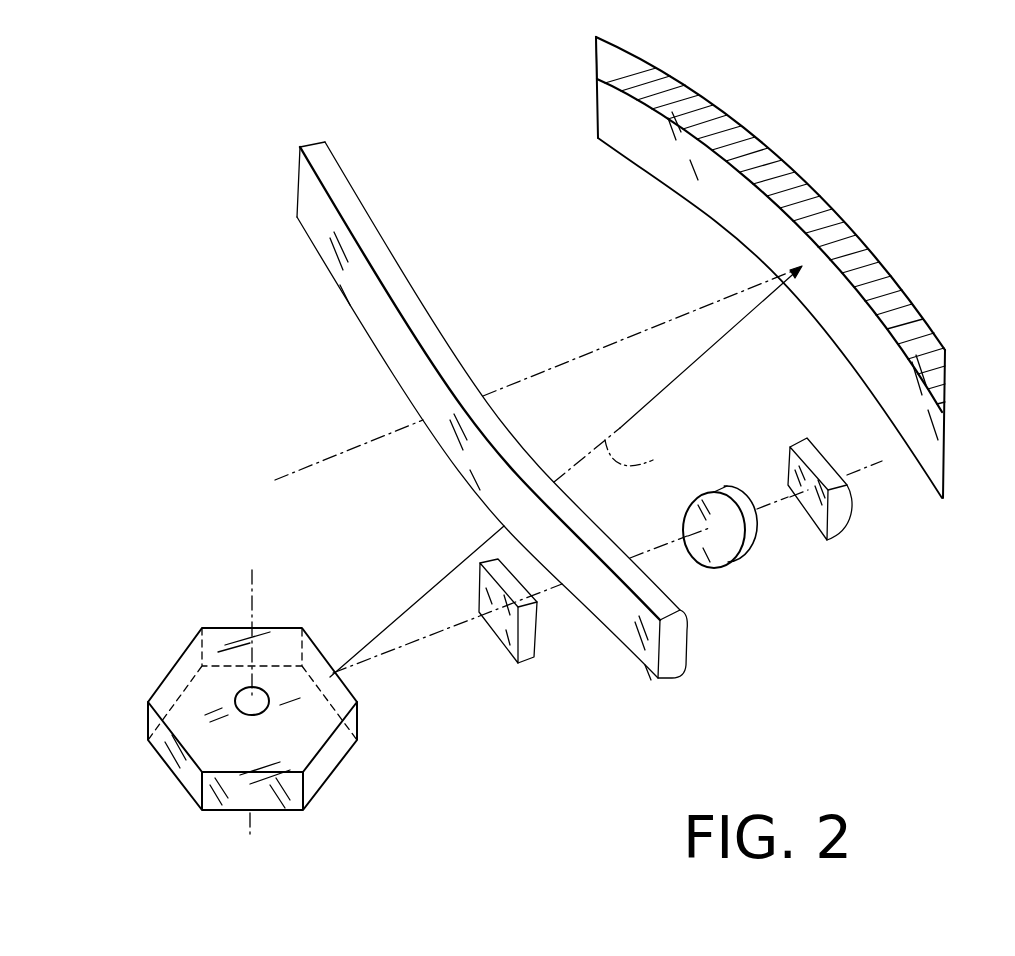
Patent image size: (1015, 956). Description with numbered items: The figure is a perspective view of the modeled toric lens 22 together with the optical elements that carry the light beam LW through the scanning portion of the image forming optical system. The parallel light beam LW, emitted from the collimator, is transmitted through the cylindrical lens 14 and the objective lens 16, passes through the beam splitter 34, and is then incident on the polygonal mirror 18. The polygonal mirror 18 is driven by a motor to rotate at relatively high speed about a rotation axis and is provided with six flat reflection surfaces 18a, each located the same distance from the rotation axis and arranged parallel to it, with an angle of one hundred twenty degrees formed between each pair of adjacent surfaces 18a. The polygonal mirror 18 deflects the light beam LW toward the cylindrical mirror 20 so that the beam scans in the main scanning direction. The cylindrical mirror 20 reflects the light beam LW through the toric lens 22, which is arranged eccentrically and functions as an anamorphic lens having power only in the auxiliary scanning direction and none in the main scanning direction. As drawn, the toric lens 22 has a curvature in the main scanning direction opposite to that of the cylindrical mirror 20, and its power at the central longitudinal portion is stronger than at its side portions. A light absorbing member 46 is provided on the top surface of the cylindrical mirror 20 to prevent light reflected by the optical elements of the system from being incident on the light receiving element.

The cylindrical lens 14 is at (851, 515).
The objective lens 16 is at (757, 542).
The polygonal mirror 18 is at (320, 730).
The flat reflection surfaces 18a is at (167, 760).
The cylindrical mirror 20 is at (937, 435).
The toric lens 22 is at (452, 357).
The beam splitter 34 is at (503, 647).
The light absorbing member 46 is at (843, 233).
The light beam LW is at (647, 449).